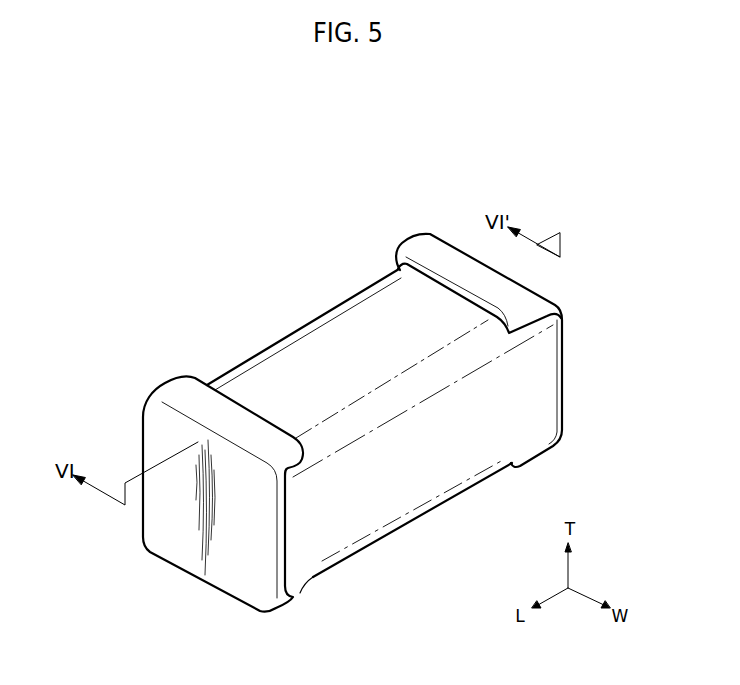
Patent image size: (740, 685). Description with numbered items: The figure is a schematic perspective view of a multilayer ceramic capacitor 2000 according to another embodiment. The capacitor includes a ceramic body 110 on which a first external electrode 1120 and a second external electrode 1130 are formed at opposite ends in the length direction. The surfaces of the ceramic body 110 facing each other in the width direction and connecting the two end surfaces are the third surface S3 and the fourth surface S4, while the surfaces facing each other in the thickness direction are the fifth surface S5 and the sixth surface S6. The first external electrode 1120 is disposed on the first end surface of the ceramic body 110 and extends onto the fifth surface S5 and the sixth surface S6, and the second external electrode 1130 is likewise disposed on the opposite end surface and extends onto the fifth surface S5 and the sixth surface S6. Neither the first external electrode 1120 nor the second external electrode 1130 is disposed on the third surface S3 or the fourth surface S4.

The multilayer ceramic capacitor 2000 is at (325, 186).
The ceramic body 110 is at (264, 275).
The first external electrode 1120 is at (230, 580).
The second external electrode 1130 is at (562, 380).
The third surface S3 is at (235, 363).
The fourth surface S4 is at (428, 475).
The fifth surface S5 is at (320, 347).
The sixth surface S6 is at (365, 548).